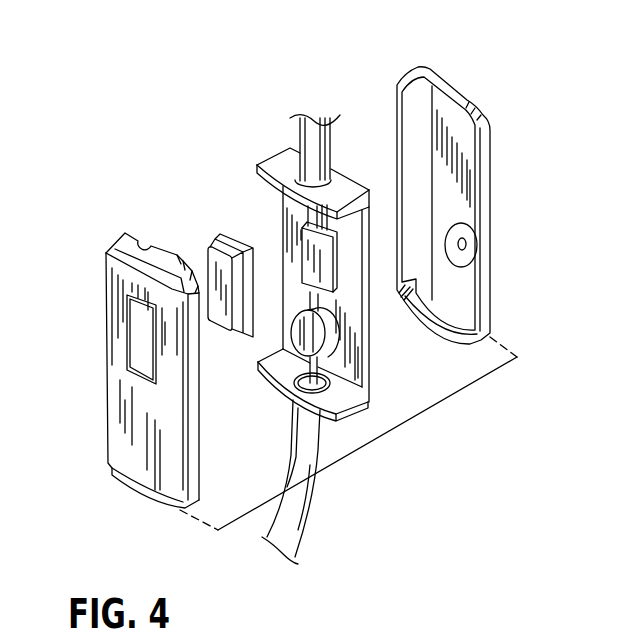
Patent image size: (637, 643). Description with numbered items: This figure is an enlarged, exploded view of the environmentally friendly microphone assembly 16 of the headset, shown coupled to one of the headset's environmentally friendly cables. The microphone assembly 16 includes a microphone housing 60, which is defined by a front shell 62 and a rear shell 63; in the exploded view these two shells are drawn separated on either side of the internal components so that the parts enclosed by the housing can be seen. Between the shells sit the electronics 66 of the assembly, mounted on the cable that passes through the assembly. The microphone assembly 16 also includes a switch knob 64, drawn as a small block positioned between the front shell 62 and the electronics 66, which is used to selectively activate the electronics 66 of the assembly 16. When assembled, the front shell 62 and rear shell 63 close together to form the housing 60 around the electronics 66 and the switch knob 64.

The microphone assembly 16 is at (128, 80).
The microphone housing 60 is at (405, 422).
The front shell 62 is at (107, 335).
The rear shell 63 is at (490, 247).
The switch knob 64 is at (214, 243).
The electronics 66 is at (315, 238).